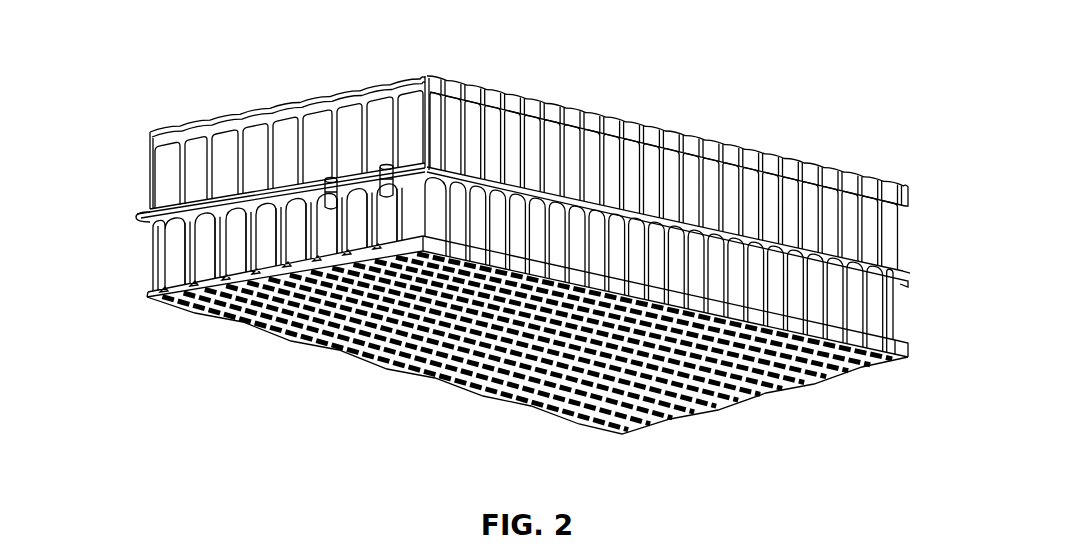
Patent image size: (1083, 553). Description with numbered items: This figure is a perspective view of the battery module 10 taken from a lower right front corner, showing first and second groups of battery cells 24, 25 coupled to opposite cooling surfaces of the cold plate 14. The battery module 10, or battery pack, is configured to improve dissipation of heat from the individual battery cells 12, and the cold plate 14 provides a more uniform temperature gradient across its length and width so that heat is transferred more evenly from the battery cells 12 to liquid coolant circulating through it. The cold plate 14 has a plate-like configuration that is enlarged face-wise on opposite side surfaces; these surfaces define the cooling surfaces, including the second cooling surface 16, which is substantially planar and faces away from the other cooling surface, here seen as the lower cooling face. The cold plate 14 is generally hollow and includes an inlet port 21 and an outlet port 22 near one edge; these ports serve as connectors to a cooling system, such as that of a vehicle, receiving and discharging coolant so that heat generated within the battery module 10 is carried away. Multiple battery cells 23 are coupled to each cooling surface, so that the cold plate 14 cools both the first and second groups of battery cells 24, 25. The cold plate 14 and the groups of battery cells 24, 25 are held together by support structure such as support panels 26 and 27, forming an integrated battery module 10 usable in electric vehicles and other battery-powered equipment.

The battery module 10 is at (772, 67).
The battery cells 12 is at (903, 242).
The cold plate 14 is at (142, 212).
The second cooling surface 16 is at (155, 223).
The inlet port 21 is at (382, 183).
The outlet port 22 is at (322, 193).
The battery cells 23 is at (160, 163).
The first group of battery cells 24 is at (149, 186).
The second group of battery cells 25 is at (158, 260).
The support panel 26 is at (513, 92).
The support panel 27 is at (722, 408).